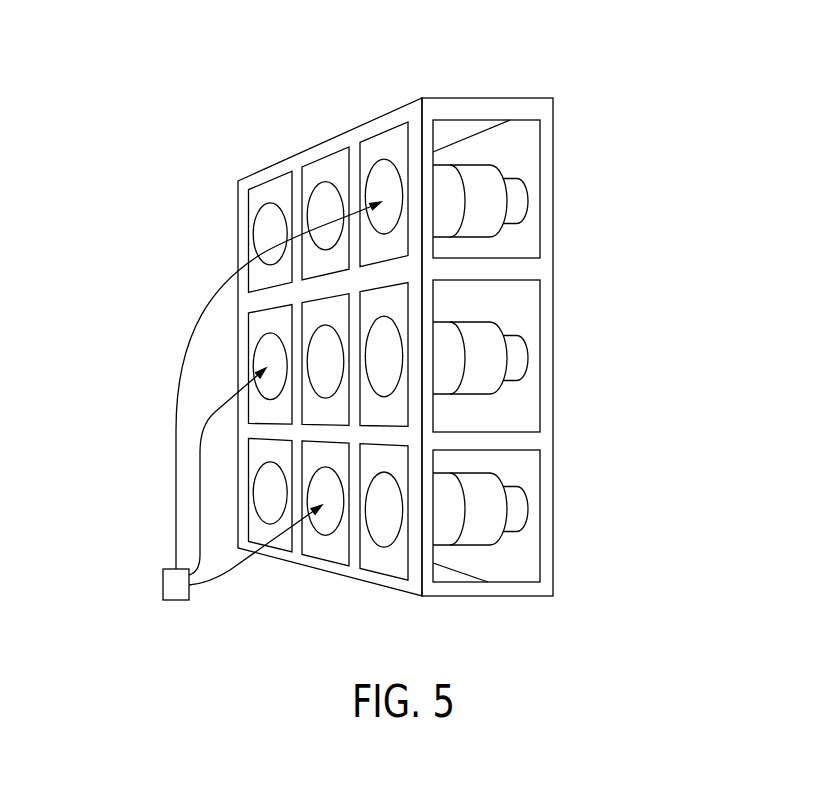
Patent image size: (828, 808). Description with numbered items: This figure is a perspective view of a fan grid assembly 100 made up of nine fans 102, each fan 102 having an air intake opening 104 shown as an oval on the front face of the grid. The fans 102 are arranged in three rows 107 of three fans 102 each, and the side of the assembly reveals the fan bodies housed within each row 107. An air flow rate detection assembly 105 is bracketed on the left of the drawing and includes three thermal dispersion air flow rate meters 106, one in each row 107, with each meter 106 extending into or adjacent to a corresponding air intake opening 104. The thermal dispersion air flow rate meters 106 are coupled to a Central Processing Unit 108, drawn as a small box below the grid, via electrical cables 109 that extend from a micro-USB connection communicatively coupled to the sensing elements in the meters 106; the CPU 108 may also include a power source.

The fan grid assembly 100 is at (498, 46).
The fan 102 is at (273, 197).
The air intake opening 104 is at (262, 233).
The air flow rate detection assembly 105 is at (133, 183).
The thermal dispersion air flow rate meter 106 is at (262, 345).
The row 107 is at (608, 102).
The Central Processing Unit (CPU) 108 is at (176, 602).
The electrical cable 109 is at (198, 516).